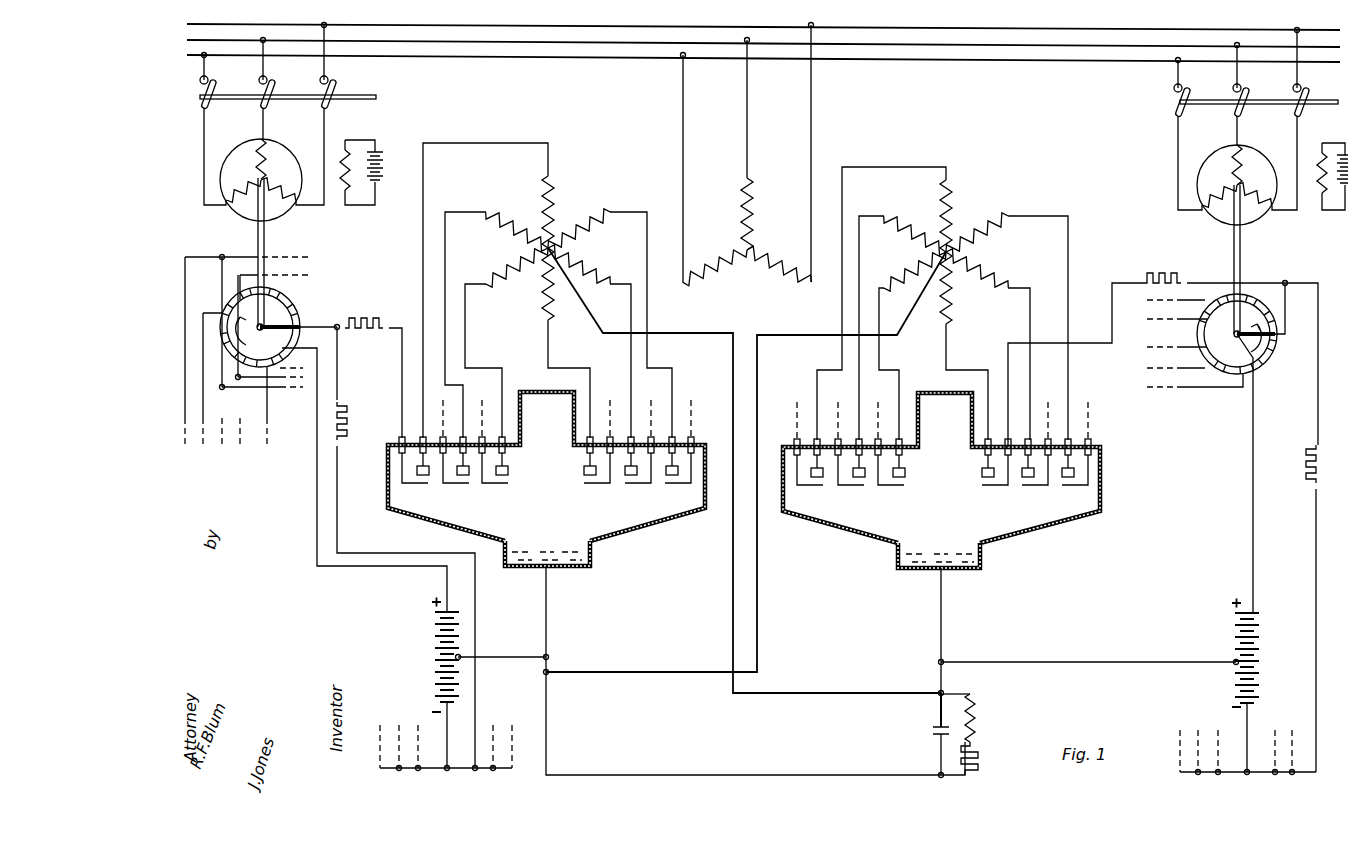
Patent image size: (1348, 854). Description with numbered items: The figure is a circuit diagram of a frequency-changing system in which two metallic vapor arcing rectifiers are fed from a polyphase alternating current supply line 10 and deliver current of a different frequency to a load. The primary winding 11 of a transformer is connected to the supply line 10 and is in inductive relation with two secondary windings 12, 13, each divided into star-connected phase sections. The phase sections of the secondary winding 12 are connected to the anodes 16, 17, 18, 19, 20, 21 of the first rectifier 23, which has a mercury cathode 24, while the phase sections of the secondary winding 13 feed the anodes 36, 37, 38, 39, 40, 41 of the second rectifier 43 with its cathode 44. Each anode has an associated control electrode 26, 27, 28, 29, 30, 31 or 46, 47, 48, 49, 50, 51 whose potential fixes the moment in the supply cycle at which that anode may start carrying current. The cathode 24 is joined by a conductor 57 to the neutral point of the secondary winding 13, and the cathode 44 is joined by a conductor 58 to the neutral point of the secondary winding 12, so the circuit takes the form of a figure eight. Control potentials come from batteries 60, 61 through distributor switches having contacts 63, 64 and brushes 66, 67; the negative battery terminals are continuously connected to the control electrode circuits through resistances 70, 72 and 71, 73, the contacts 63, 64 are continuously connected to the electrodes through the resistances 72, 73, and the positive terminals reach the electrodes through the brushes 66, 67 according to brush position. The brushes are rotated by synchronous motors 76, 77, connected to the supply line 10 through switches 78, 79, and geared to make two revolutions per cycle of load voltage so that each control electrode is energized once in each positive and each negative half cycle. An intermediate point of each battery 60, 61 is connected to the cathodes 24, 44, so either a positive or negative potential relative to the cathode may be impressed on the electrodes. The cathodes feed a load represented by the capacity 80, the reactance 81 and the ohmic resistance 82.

The polyphase alternating current supply line 10 is at (1077, 30).
The primary winding 11 is at (754, 295).
The secondary winding 12 is at (518, 307).
The secondary winding 13 is at (980, 307).
The anode 16 is at (428, 471).
The anode 17 is at (471, 471).
The anode 18 is at (509, 472).
The anode 19 is at (584, 473).
The anode 20 is at (620, 471).
The anode 21 is at (662, 471).
The electric current rectifier 23 is at (556, 423).
The cathode 24 is at (586, 561).
The control electrode 26 is at (411, 472).
The control electrode 27 is at (456, 490).
The control electrode 28 is at (506, 490).
The control electrode 29 is at (592, 488).
The control electrode 30 is at (638, 492).
The control electrode 31 is at (684, 486).
The anode 36 is at (825, 473).
The anode 37 is at (868, 473).
The anode 38 is at (905, 474).
The anode 39 is at (982, 476).
The anode 40 is at (1016, 473).
The anode 41 is at (1057, 473).
The electric current rectifier 43 is at (954, 425).
The cathode 44 is at (968, 570).
The control electrode 46 is at (805, 456).
The control electrode 47 is at (850, 492).
The control electrode 48 is at (902, 490).
The control electrode 49 is at (986, 490).
The control electrode 50 is at (1034, 494).
The control electrode 51 is at (1078, 488).
The conductor 57 is at (757, 590).
The conductor 58 is at (732, 596).
The battery 60 is at (436, 672).
The battery 61 is at (1254, 670).
The contacts 63 is at (290, 312).
The contacts 64 is at (1190, 336).
The brush 66 is at (297, 327).
The brush 67 is at (1256, 332).
The resistance 70 is at (342, 436).
The resistance 71 is at (1308, 468).
The resistance 72 is at (367, 320).
The resistance 73 is at (1170, 280).
The synchronous motor 76 is at (293, 217).
The synchronous motor 77 is at (1263, 225).
The switch 78 is at (360, 98).
The switch 79 is at (1328, 102).
The capacity 80 is at (934, 730).
The reactance 81 is at (980, 714).
The ohmic resistance 82 is at (980, 764).